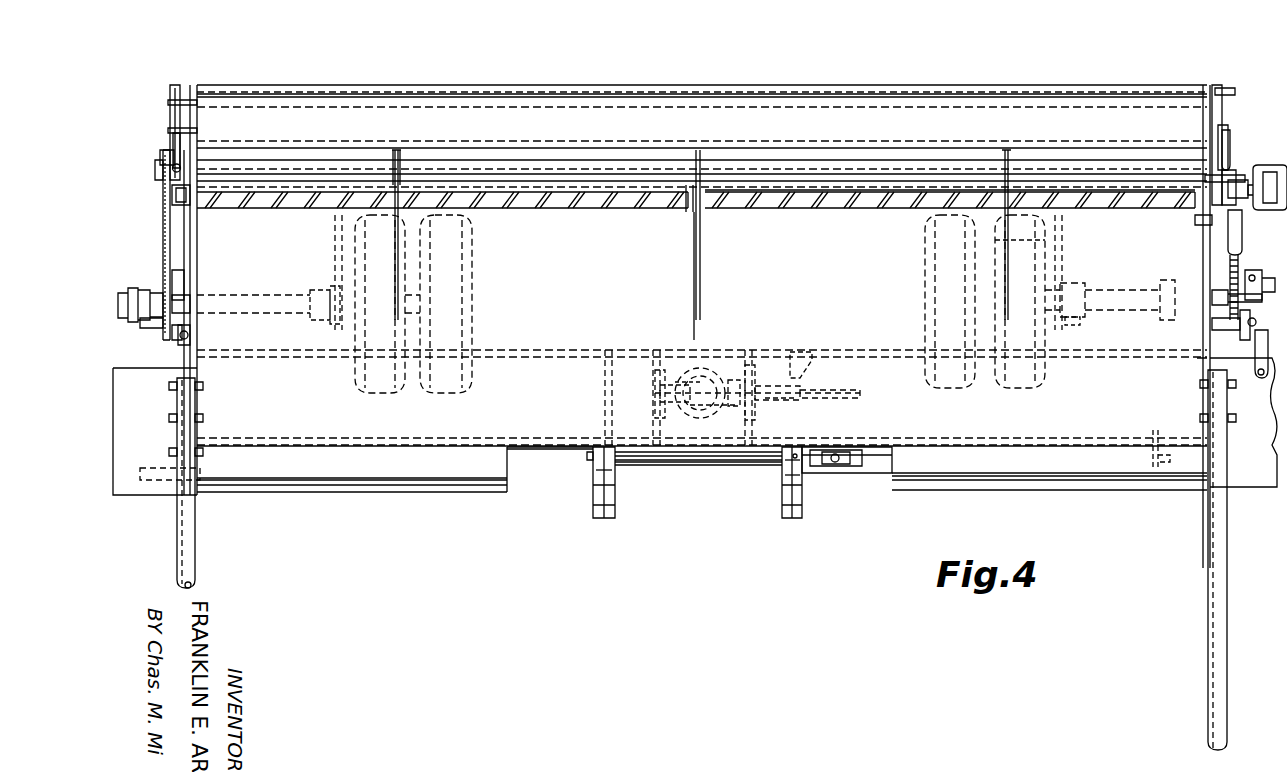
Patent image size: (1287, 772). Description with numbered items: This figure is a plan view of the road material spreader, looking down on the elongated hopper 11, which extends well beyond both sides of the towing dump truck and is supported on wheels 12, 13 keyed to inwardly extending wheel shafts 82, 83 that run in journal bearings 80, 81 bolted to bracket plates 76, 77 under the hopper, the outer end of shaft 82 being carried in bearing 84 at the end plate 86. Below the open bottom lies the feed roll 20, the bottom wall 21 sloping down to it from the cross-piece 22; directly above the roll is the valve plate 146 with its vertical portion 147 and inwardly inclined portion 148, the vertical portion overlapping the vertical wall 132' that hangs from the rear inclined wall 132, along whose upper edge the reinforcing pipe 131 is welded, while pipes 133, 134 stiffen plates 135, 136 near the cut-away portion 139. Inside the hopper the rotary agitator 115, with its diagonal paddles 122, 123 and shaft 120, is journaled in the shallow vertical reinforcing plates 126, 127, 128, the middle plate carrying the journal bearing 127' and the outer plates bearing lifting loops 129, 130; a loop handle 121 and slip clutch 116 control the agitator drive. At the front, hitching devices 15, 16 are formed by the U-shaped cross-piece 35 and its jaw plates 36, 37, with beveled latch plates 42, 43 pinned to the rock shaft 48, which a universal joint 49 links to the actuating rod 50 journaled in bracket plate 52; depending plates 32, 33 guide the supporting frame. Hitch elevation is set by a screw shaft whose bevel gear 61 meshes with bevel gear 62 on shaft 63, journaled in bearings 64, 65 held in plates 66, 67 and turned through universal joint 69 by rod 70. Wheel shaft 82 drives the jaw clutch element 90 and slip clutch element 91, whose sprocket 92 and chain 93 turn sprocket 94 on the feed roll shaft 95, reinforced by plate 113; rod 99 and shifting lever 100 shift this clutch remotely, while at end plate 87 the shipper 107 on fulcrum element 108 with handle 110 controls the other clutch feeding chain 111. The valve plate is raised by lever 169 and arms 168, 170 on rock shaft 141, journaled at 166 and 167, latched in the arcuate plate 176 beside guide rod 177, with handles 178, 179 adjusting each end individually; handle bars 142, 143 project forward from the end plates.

The hopper 11 is at (727, 301).
The wheel 12 is at (472, 262).
The wheel 13 is at (925, 248).
The hitching device 15 is at (620, 526).
The hitching device 16 is at (785, 532).
The feed roll 20 is at (597, 175).
The bottom wall 21 is at (565, 448).
The cross-piece 22 is at (520, 440).
The vertical plate 32 is at (600, 365).
The vertical plate 33 is at (812, 370).
The cross-piece 35 is at (690, 465).
The jaw plate 36 is at (608, 470).
The jaw plate 37 is at (785, 485).
The latch plate 42 is at (598, 485).
The latch plate 43 is at (790, 465).
The rock shaft 48 is at (805, 470).
The universal joint 49 is at (850, 474).
The actuating rod 50 is at (870, 465).
The bracket plate 52 is at (1152, 468).
The bevel gear 61 is at (690, 376).
The bevel gear 62 is at (732, 380).
The shaft 63 is at (700, 375).
The journal bearing 64 is at (660, 370).
The journal bearing 65 is at (750, 365).
The plate 66 is at (660, 400).
The plate 67 is at (725, 405).
The universal joint 69 is at (795, 411).
The actuating rod 70 is at (860, 392).
The bracket plate 76 is at (335, 222).
The bracket plate 77 is at (1062, 240).
The journal bearing 80 is at (320, 290).
The journal bearing 81 is at (1080, 318).
The wheel shaft 82 is at (255, 295).
The wheel shaft 83 is at (1120, 290).
The bearing 84 is at (180, 298).
The end plate 86 is at (197, 250).
The end plate 87 is at (1203, 425).
The jaw clutch element 90 is at (135, 290).
The slip clutch element 91 is at (152, 328).
The sprocket 92 is at (172, 335).
The sprocket chain 93 is at (163, 240).
The sprocket 94 is at (160, 157).
The feed roll shaft 95 is at (155, 170).
The rod 99 is at (184, 345).
The shifting lever 100 is at (1263, 380).
The shipper 107 is at (1255, 278).
The fulcrum element 108 is at (1222, 306).
The handle 110 is at (1250, 340).
The sprocket chain 111 is at (1230, 262).
The reinforcing plate 113 is at (172, 280).
The rotary agitator 115 is at (668, 224).
The slip clutch 116 is at (1252, 215).
The agitator shaft 120 is at (172, 195).
The loop handle 121 is at (1268, 150).
The paddle 122 is at (568, 208).
The paddle 123 is at (795, 205).
The vertical reinforcing plate 126 is at (395, 245).
The vertical reinforcing plate 127 is at (734, 235).
The journal bearing 127' is at (684, 266).
The vertical reinforcing plate 128 is at (995, 222).
The U-shaped loop 129 is at (394, 165).
The U-shaped loop 130 is at (1010, 160).
The pipe 131 is at (790, 85).
The rear inclined wall 132 is at (702, 99).
The vertical wall 132' is at (702, 193).
The reinforcing pipe 133 is at (265, 482).
The reinforcing pipe 134 is at (960, 480).
The plate 135 is at (460, 485).
The plate 136 is at (1052, 480).
The cut-away portion 139 is at (520, 465).
The rock shaft 141 is at (1018, 95).
The handle bar 142 is at (180, 560).
The handle bar 143 is at (1217, 590).
The valve plate 146 is at (850, 170).
The vertical portion 147 is at (845, 140).
The inwardly inclined portion 148 is at (826, 160).
The journal bearing 166 is at (174, 95).
The journal 167 is at (1225, 125).
The arm 168 is at (197, 122).
The lever 169 is at (1228, 135).
The arm 170 is at (1212, 115).
The arcuate plate 176 is at (1200, 220).
The guide rod 177 is at (1215, 176).
The handle 178 is at (173, 150).
The handle 179 is at (1230, 145).